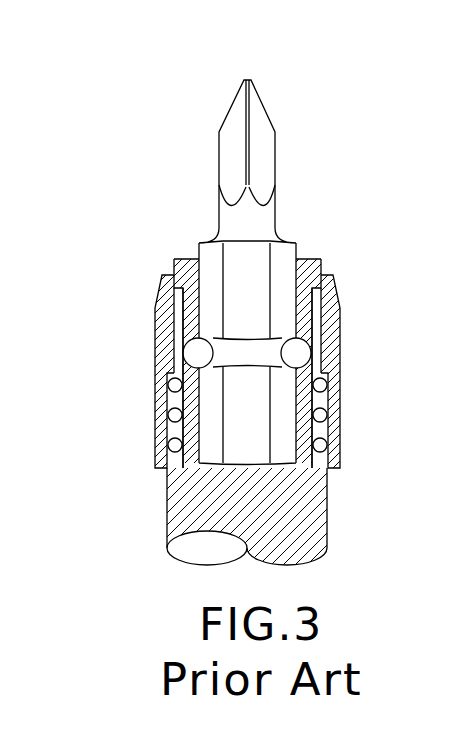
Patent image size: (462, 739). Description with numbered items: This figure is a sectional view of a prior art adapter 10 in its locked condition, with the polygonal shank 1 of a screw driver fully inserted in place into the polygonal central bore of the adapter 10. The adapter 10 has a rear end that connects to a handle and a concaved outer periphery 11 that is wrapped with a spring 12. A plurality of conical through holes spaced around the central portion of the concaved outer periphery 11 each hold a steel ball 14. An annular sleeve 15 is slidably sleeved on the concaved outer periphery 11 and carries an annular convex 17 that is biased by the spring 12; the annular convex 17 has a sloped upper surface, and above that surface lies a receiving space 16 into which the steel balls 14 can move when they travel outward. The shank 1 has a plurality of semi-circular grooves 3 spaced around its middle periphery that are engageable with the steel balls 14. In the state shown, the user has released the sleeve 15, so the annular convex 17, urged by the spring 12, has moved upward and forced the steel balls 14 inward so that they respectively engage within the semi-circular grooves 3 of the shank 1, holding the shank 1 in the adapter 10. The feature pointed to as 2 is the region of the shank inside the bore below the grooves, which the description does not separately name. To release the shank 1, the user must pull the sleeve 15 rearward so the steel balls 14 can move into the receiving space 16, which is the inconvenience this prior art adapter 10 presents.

The polygonal shank 1 is at (287, 255).
The hexagonal socket 2 is at (262, 407).
The semi-circular grooves 3 is at (285, 350).
The adapter 10 is at (302, 527).
The concaved outer periphery 11 is at (175, 436).
The spring 12 is at (320, 447).
The steel ball 14 is at (297, 352).
The annular sleeve 15 is at (322, 385).
The receiving space 16 is at (315, 312).
The annular convex 17 is at (178, 367).